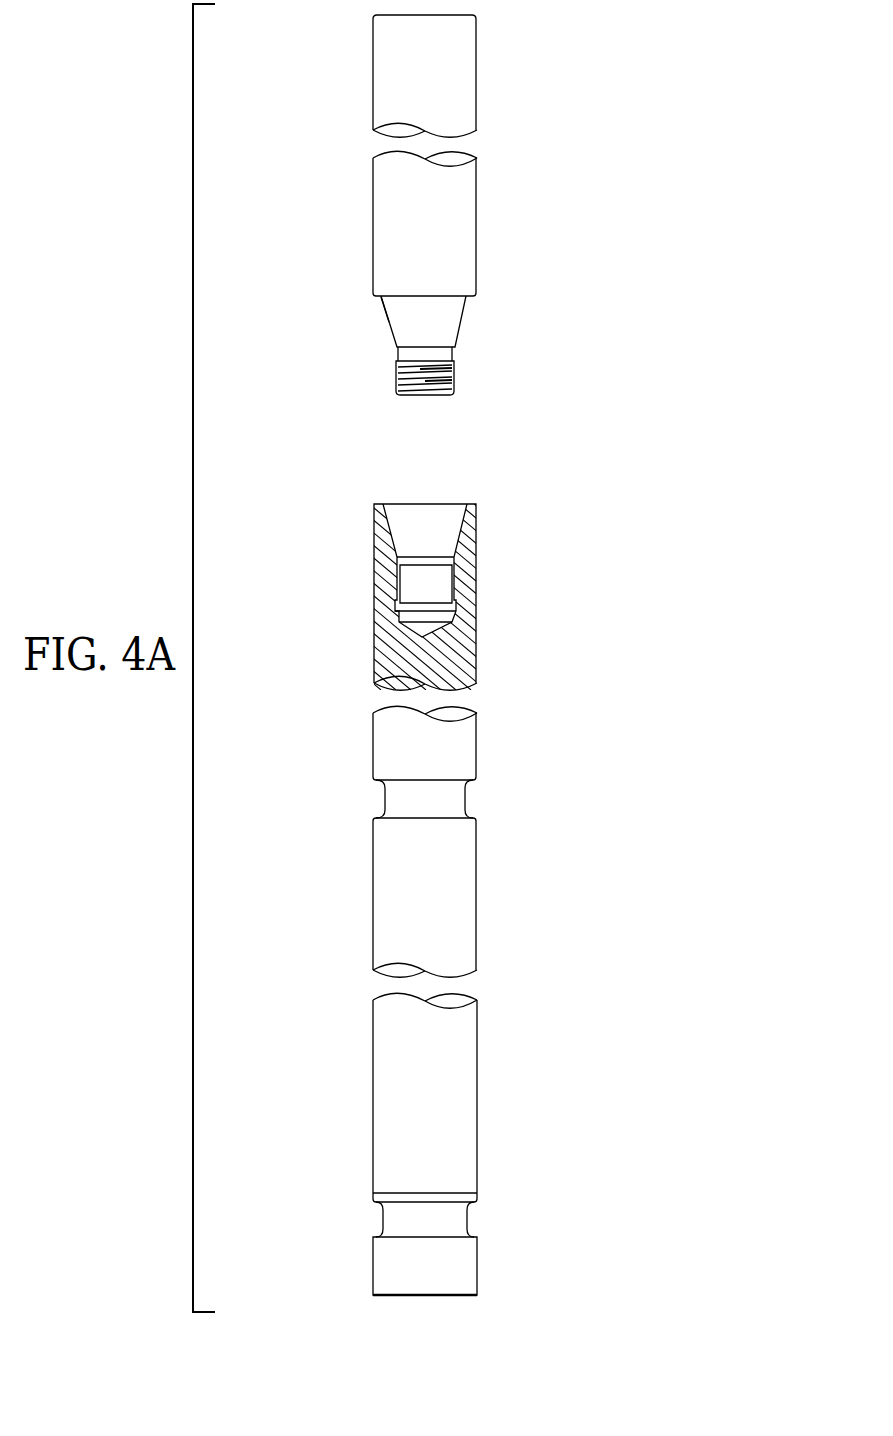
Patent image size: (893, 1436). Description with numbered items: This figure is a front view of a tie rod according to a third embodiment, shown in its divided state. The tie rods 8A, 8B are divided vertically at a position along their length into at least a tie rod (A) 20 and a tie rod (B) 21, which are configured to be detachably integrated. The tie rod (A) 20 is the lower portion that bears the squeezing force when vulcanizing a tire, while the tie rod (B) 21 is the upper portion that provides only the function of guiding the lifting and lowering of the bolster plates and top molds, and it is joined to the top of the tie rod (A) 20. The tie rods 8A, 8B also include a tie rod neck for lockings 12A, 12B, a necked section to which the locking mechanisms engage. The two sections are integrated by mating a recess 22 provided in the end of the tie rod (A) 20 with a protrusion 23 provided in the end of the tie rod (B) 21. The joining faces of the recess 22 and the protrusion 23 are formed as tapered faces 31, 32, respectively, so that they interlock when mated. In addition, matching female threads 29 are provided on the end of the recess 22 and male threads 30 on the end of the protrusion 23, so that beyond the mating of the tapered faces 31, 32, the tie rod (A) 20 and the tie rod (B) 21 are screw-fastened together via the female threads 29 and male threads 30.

The tie rod (A) 20 is at (396, 1000).
The tie rod (B) 21 is at (460, 208).
The recess 22 is at (427, 517).
The protrusion 23 is at (445, 319).
The female threads 29 is at (402, 585).
The male threads 30 is at (397, 377).
The tapered face 31 is at (397, 527).
The tapered face 32 is at (389, 322).
The tie rod 8A is at (435, 565).
The tie rod 8B is at (435, 565).
The tie rod neck for locking 12A is at (350, 799).
The tie rod neck for locking 12B is at (385, 797).